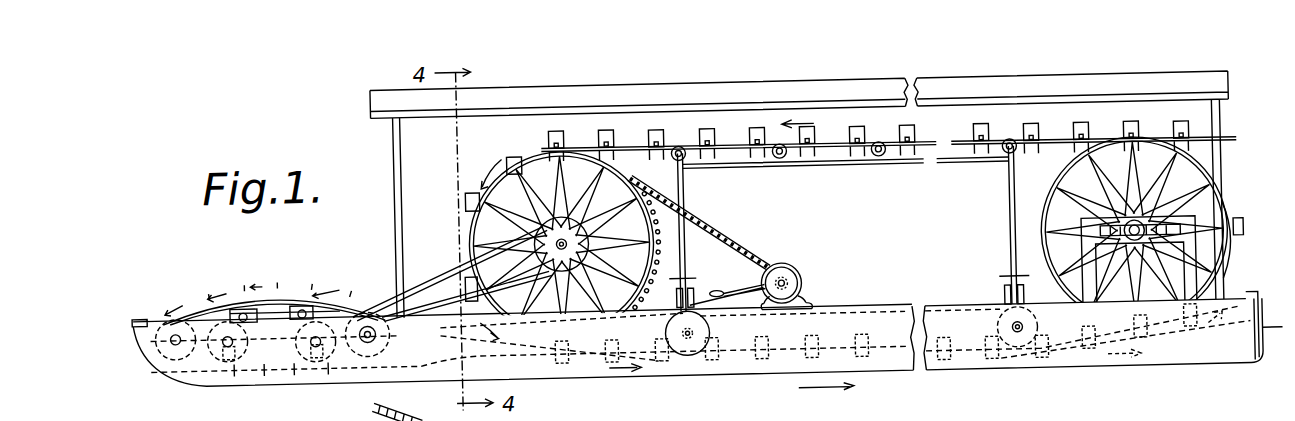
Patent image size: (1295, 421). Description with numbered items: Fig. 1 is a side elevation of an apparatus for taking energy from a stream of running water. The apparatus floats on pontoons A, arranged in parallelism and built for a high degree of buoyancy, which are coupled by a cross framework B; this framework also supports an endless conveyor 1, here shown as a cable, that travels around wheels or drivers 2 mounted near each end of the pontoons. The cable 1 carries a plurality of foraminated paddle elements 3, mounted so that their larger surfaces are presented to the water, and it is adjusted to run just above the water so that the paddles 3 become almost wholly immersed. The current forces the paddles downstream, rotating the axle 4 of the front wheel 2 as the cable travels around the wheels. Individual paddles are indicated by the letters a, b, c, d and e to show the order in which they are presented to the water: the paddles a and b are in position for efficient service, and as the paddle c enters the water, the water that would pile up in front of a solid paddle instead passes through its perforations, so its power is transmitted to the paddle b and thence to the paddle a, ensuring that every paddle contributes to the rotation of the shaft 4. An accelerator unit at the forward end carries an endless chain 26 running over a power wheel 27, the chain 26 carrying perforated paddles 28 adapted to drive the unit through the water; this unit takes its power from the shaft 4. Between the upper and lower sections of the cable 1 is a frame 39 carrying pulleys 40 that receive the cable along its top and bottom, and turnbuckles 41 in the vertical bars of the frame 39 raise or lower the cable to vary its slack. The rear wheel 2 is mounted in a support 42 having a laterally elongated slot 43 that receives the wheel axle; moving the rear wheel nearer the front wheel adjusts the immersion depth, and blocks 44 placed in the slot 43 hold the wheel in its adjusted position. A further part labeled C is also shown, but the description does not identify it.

The endless conveyor 1 is at (962, 145).
The wheels or drivers 2 is at (585, 153).
The foraminated paddle elements 3 is at (668, 140).
The axle 4 is at (584, 214).
The endless chain 26 is at (290, 290).
The power wheel 27 is at (370, 306).
The perforated paddles 28 is at (345, 306).
The frame 39 is at (872, 170).
The pulleys 40 is at (688, 158).
The turnbuckles 41 is at (692, 290).
The support 42 is at (1102, 243).
The laterally elongated slot 43 is at (1160, 238).
The blocks 44 is at (1083, 242).
The pontoons A is at (1222, 365).
The cross framework B is at (1162, 79).
The drive pulley C is at (803, 278).
The paddle a is at (770, 362).
The paddle b is at (718, 362).
The paddle c is at (665, 362).
The paddle d is at (615, 362).
The paddle e is at (572, 355).